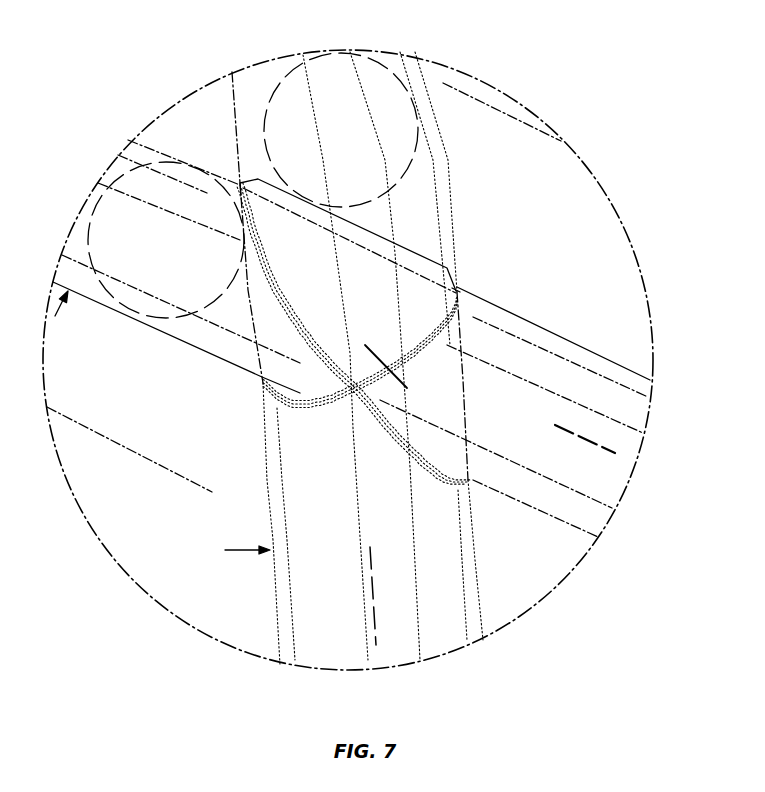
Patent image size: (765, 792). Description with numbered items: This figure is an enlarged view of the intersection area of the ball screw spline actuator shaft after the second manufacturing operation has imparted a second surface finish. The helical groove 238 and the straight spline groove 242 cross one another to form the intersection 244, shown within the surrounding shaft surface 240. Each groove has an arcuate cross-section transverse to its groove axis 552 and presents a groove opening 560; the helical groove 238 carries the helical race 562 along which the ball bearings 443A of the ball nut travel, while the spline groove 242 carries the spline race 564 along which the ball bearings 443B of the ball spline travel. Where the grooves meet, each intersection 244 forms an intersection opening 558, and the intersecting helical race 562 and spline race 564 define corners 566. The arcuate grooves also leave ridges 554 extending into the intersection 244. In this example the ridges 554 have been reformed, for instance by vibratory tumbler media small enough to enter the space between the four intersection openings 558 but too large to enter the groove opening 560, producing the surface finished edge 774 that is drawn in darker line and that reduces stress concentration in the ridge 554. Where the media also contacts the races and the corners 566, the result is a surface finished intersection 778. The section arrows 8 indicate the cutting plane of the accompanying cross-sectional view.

The section line of FIG. 8 is at (365, 345).
The helical groove 238 is at (442, 151).
The panel 240 is at (550, 226).
The spline groove 242 is at (148, 327).
The intersection 244 is at (270, 372).
The ball bearings of the ball nut 443A is at (308, 57).
The ball bearings of the ball spline 443B is at (222, 292).
The groove axis 552 is at (568, 432).
The ridge 554 is at (282, 272).
The intersection opening 558 is at (416, 252).
The groove opening 560 is at (152, 143).
The helical race 562 is at (312, 591).
The spline race 564 is at (540, 465).
The corner 566 is at (461, 286).
The surface finished edge 774 is at (291, 304).
The surface finished intersection 778 is at (268, 330).